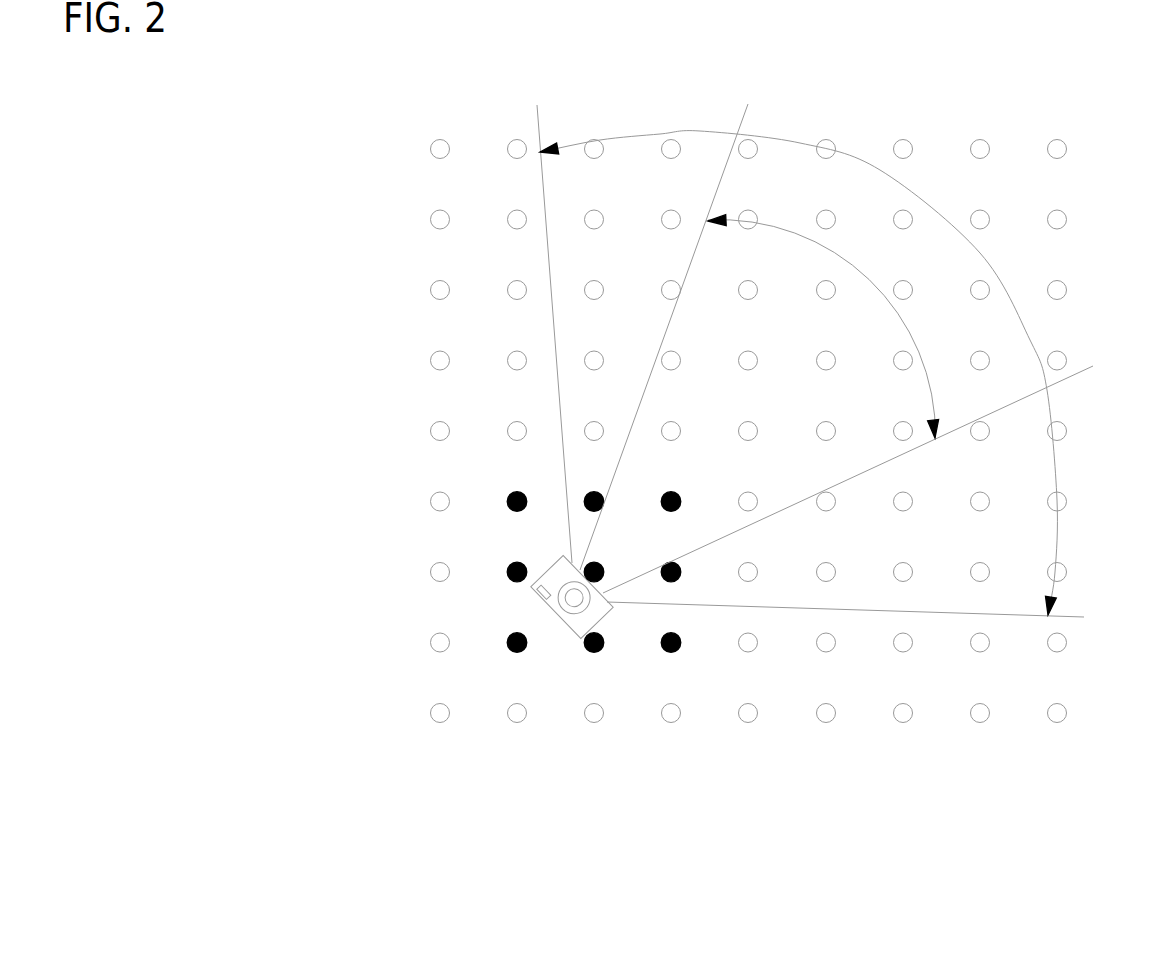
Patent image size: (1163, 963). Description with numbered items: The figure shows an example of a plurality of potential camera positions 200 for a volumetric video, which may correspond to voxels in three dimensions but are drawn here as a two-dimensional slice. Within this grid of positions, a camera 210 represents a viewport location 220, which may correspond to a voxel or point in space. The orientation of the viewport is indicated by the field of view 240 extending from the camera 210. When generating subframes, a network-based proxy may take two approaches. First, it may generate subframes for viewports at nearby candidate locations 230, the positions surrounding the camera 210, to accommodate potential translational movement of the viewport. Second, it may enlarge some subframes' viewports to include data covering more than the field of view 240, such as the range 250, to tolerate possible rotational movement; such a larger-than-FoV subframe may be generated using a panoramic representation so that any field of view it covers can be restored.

The plurality of potential camera positions 200 is at (778, 882).
The camera 210 is at (557, 621).
The viewport location 220 is at (604, 567).
The nearby candidate locations 230 is at (509, 504).
The field of view 240 is at (913, 342).
The range 250 is at (982, 253).